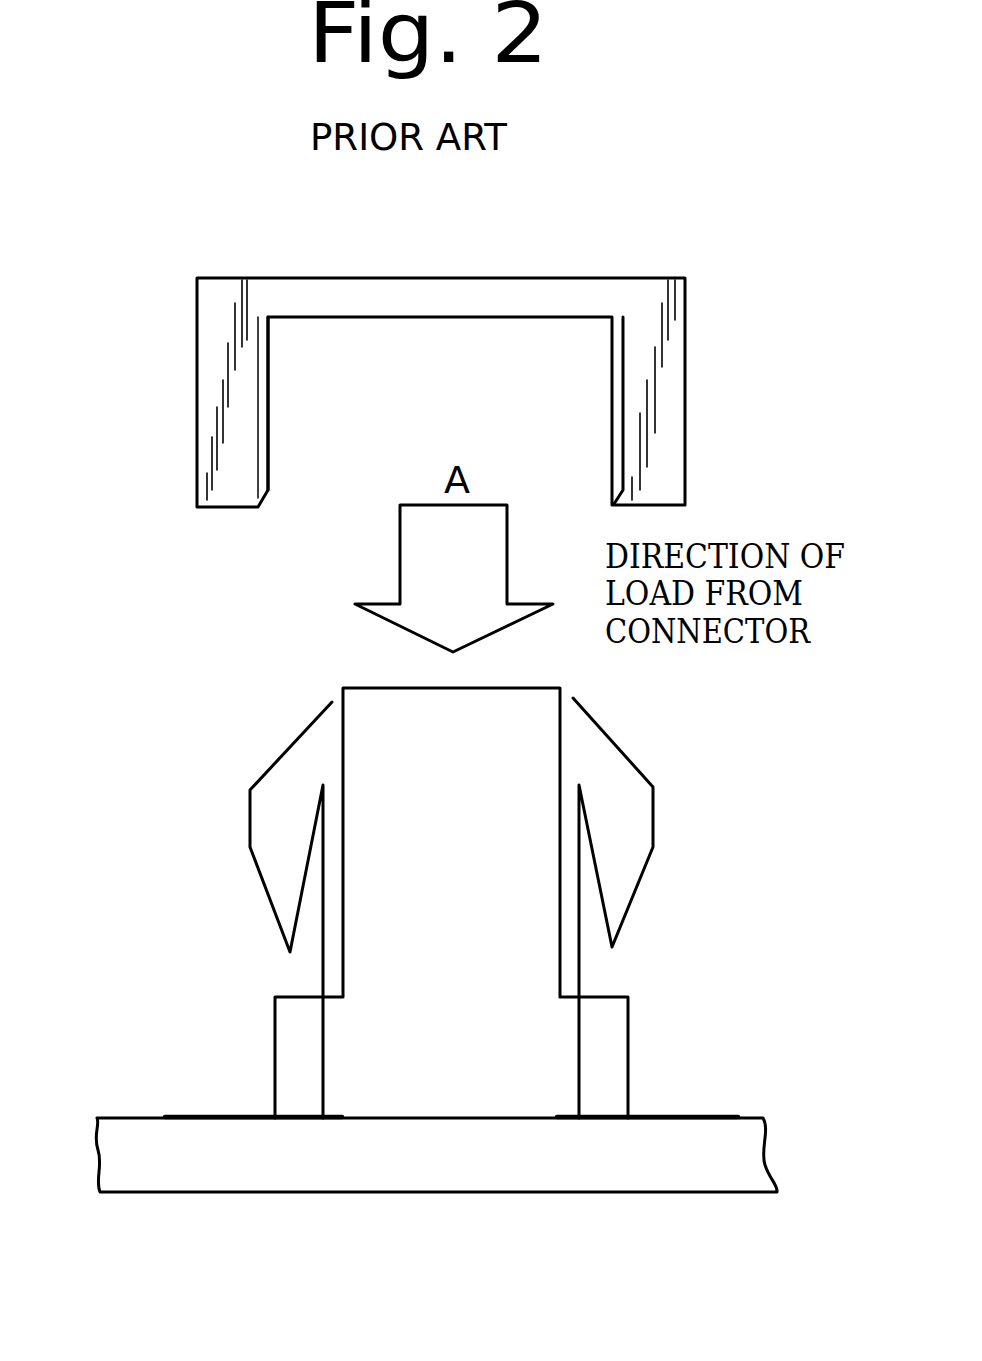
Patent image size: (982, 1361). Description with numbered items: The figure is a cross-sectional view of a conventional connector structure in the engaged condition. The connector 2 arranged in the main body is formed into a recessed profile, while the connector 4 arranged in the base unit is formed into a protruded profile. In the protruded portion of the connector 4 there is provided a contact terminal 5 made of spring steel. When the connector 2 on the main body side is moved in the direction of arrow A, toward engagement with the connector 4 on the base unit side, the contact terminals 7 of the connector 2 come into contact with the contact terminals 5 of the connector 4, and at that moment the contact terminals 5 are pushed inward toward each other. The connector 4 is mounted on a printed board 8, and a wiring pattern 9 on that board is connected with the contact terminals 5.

The connector 2 is at (665, 348).
The contact terminal 7 is at (268, 378).
The connector 4 is at (535, 1063).
The contact terminal 5 is at (250, 802).
The wiring pattern 9 is at (198, 1118).
The printed board 8 is at (218, 1162).